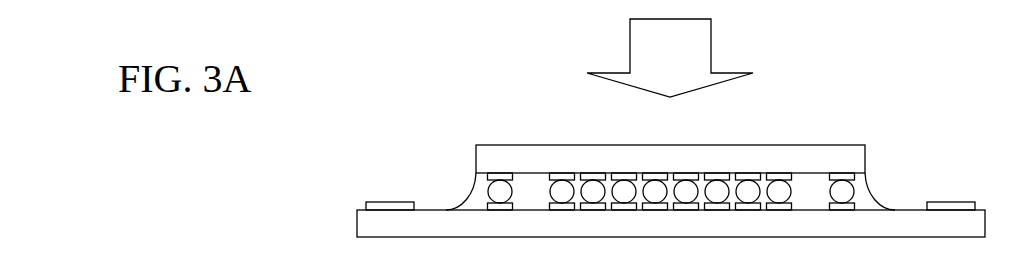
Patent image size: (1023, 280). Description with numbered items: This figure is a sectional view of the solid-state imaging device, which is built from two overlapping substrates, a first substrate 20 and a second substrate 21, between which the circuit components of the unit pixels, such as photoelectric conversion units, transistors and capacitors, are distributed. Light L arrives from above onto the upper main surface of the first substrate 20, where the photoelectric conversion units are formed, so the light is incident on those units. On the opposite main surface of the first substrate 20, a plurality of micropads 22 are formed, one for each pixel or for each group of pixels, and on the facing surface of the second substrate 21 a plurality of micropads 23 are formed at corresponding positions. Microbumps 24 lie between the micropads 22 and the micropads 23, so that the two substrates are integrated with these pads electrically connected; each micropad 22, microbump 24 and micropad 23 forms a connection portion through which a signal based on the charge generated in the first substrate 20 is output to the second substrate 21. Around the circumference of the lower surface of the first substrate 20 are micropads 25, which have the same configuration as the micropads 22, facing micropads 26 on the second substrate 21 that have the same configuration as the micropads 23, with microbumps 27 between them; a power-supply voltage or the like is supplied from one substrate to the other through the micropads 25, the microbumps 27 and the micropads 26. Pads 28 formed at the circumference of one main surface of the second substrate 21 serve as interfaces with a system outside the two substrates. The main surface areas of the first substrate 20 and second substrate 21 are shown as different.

The light L is at (628, 42).
The first substrate 20 is at (813, 157).
The second substrate 21 is at (428, 220).
The micropad 22 is at (748, 177).
The micropad 23 is at (656, 210).
The microbump 24 is at (561, 190).
The micropad 25 is at (499, 178).
The micropad 26 is at (499, 210).
The microbump 27 is at (494, 192).
The pad 28 is at (387, 202).